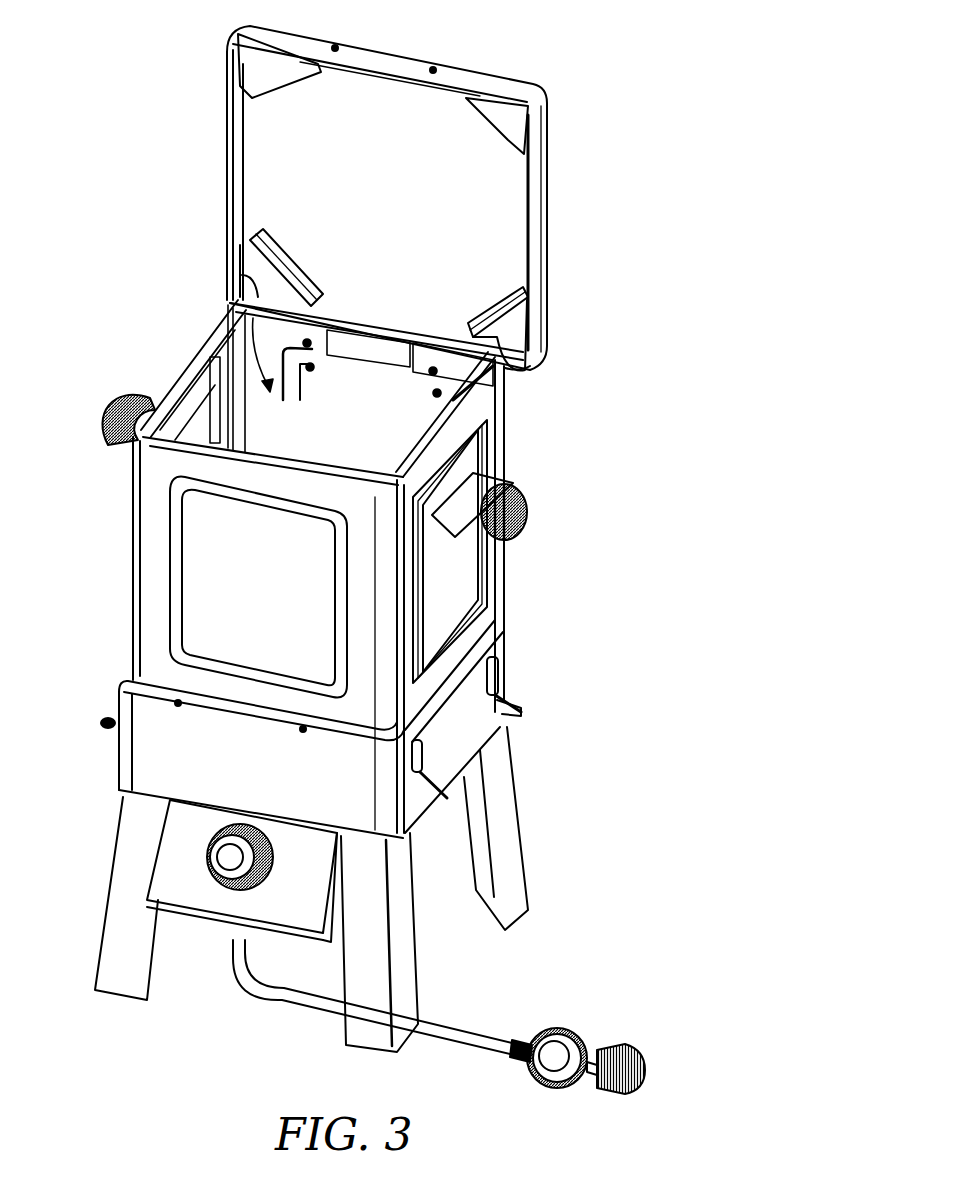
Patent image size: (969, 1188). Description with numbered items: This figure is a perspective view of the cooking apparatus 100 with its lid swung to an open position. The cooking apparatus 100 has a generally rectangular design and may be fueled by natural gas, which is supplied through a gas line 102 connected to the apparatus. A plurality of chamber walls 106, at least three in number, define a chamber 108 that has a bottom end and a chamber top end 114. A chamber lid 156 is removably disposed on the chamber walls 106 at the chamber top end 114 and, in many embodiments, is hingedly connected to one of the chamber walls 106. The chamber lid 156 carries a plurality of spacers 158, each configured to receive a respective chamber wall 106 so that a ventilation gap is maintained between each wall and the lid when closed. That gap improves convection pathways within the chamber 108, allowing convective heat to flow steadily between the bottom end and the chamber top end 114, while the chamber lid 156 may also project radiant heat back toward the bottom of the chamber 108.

The cooking apparatus 100 is at (648, 80).
The gas line 102 is at (307, 1007).
The chamber walls 106 is at (197, 427).
The chamber 108 is at (232, 290).
The chamber top end 114 is at (213, 328).
The chamber lid 156 is at (433, 143).
The spacers 158 is at (517, 138).